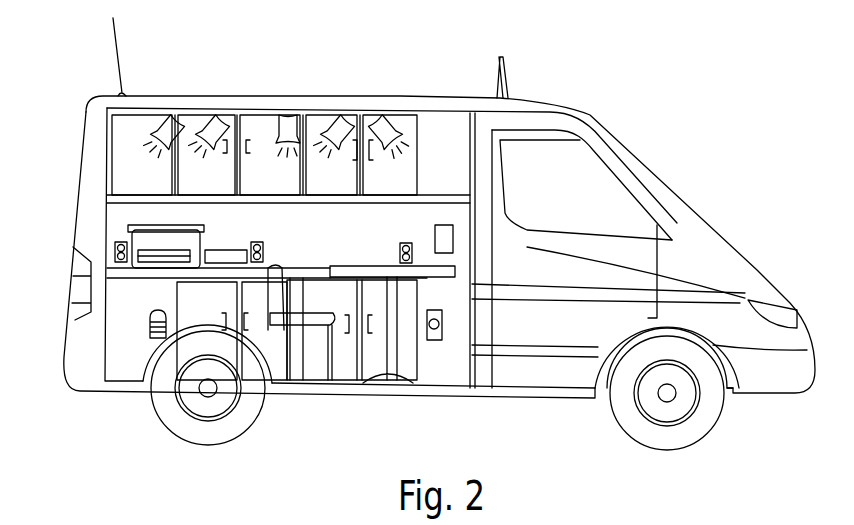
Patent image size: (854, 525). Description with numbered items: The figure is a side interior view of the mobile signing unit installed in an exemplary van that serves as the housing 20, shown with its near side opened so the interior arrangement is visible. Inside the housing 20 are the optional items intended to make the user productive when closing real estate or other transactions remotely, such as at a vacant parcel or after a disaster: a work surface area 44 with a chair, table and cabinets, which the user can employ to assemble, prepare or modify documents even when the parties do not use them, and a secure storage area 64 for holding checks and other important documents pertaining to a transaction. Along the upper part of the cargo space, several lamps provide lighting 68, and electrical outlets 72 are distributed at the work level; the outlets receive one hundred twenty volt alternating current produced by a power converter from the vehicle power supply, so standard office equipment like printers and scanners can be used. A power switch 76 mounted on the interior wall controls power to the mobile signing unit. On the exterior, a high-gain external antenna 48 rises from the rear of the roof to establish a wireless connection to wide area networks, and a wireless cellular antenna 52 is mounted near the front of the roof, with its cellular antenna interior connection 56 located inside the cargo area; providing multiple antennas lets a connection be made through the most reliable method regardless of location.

The housing 20 is at (660, 186).
The work surface area 44 is at (357, 252).
The high-gain external antenna 48 is at (119, 58).
The wireless cellular antenna 52 is at (504, 62).
The cellular antenna interior connection 56 is at (432, 341).
The secure storage area 64 is at (132, 342).
The lighting 68 is at (335, 121).
The electrical outlets 72 is at (118, 243).
The power switch 76 is at (443, 225).